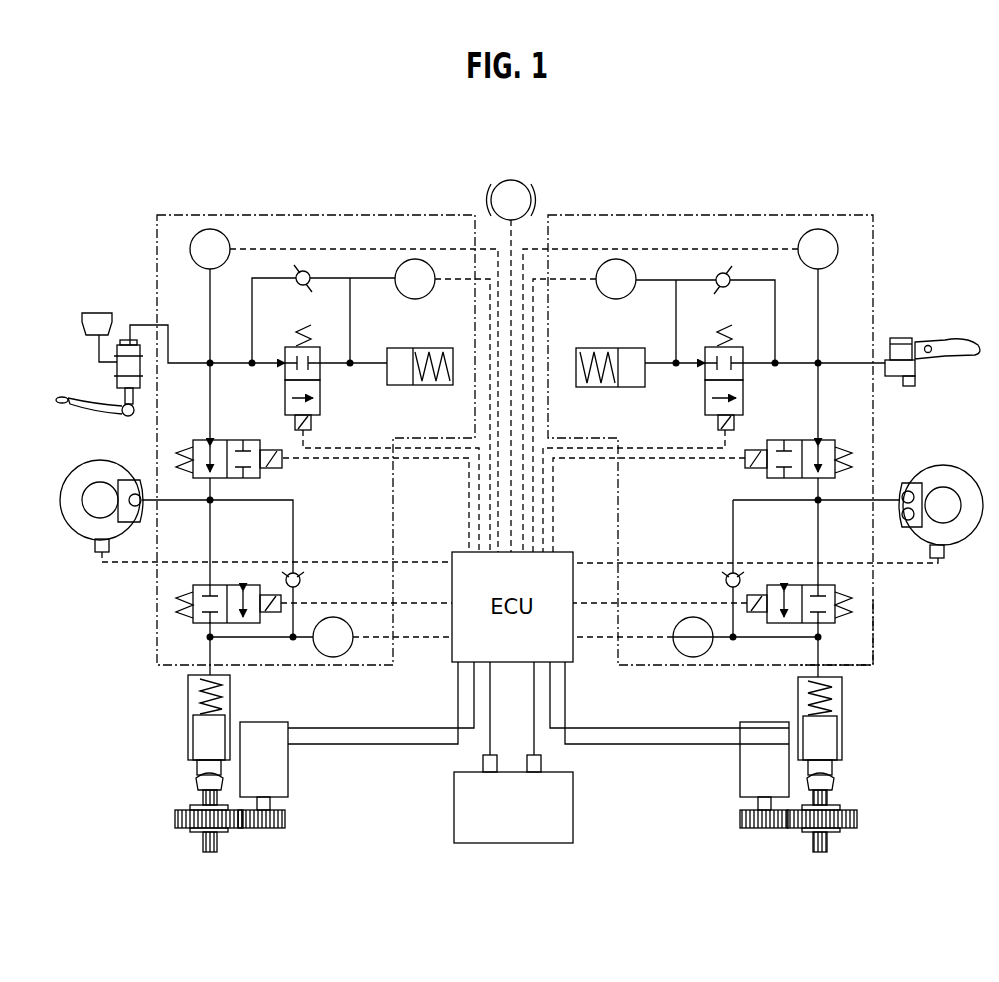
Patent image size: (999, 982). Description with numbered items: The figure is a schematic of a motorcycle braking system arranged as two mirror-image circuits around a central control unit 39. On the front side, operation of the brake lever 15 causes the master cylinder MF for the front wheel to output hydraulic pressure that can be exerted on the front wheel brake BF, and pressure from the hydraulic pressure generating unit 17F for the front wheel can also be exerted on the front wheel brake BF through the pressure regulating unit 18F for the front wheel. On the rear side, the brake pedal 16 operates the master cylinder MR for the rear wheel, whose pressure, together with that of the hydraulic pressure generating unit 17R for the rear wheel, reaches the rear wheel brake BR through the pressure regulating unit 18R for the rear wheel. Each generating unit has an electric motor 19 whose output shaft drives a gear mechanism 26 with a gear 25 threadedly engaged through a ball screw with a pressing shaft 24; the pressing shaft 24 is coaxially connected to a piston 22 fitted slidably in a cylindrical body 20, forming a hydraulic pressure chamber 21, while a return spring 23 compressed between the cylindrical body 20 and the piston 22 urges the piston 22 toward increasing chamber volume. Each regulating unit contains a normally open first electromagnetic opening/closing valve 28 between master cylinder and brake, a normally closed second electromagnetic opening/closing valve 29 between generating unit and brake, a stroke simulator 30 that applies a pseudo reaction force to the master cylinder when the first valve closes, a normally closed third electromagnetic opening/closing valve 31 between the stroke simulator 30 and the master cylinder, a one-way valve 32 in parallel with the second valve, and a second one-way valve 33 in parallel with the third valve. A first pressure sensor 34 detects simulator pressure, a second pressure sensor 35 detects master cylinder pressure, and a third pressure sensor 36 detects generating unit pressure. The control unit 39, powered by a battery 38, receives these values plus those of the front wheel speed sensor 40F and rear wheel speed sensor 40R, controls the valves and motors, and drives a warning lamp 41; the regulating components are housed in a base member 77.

The brake lever 15 is at (957, 339).
The brake pedal 16 is at (68, 396).
The hydraulic pressure generating unit for the rear wheel 17R is at (182, 794).
The hydraulic pressure generating unit for the front wheel 17F is at (736, 790).
The pressure regulating unit for the rear wheel 18R is at (152, 258).
The pressure regulating unit for the front wheel 18F is at (798, 210).
The electric motor 19 is at (514, 766).
The cylindrical body 20 is at (232, 696).
The hydraulic pressure chamber 21 is at (193, 712).
The piston 22 is at (200, 752).
The return spring 23 is at (198, 690).
The pressing shaft 24 is at (217, 843).
The gear 25 is at (180, 830).
The gear mechanism 26 is at (289, 826).
The first electromagnetic opening/closing valve 28 is at (229, 440).
The second electromagnetic opening/closing valve 29 is at (202, 625).
The stroke simulator 30 is at (408, 344).
The third electromagnetic opening/closing valve 31 is at (322, 402).
The one-way valve 32 is at (302, 578).
The second one-way valve 33 is at (310, 292).
The first pressure sensor 34 is at (397, 271).
The second pressure sensor 35 is at (197, 263).
The third pressure sensor 36 is at (313, 647).
The battery 38 is at (513, 807).
The control unit 39 is at (511, 664).
The rear wheel speed sensor 40R is at (98, 548).
The front wheel speed sensor 40F is at (945, 559).
The warning lamp 41 is at (536, 194).
The base member 77 is at (875, 637).
The master cylinder for the rear wheel MR is at (125, 360).
The master cylinder for the front wheel MF is at (898, 378).
The rear wheel brake BR is at (138, 478).
The front wheel brake BF is at (908, 480).